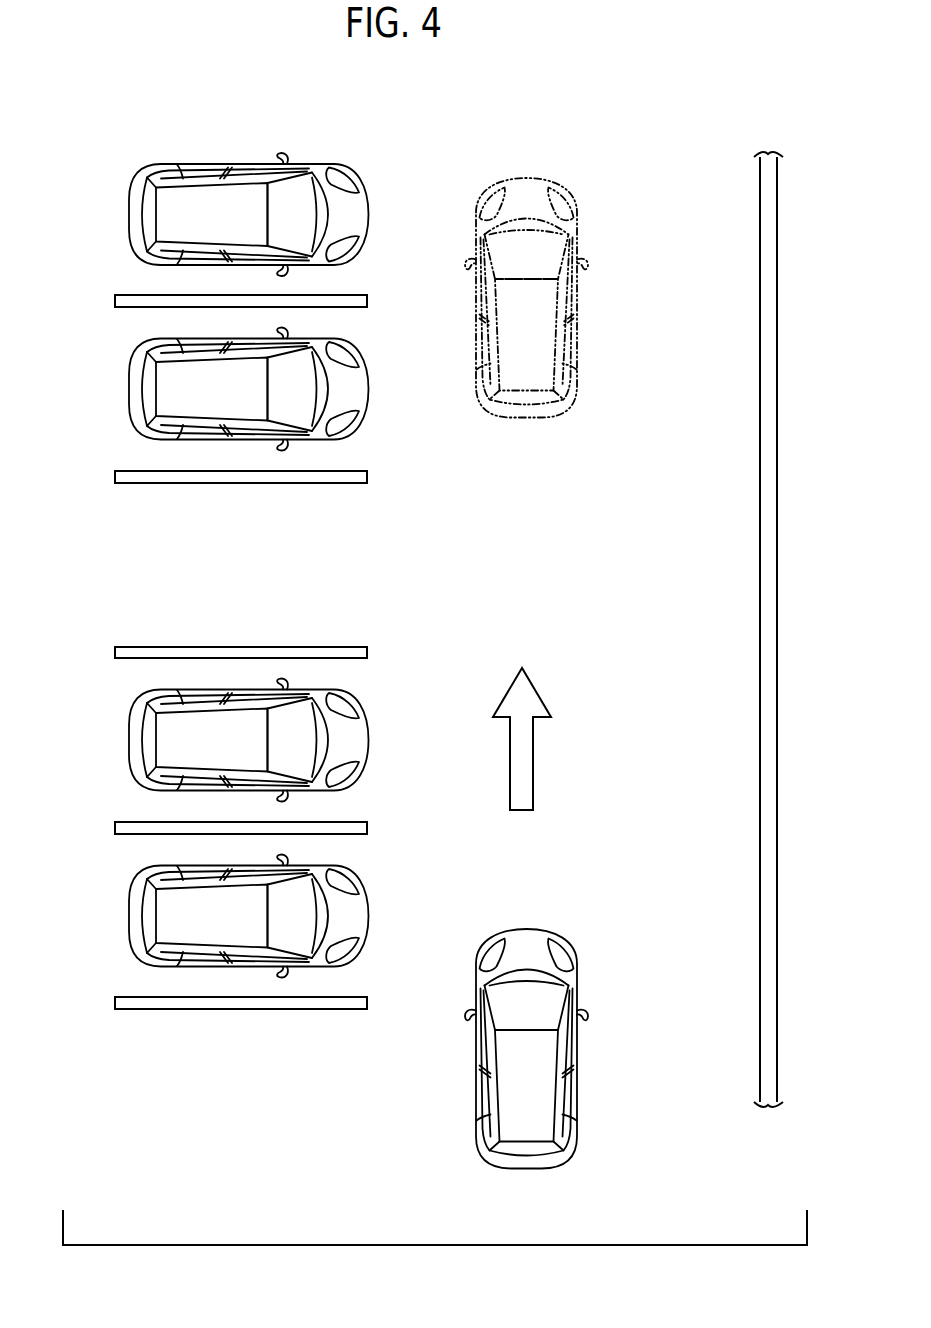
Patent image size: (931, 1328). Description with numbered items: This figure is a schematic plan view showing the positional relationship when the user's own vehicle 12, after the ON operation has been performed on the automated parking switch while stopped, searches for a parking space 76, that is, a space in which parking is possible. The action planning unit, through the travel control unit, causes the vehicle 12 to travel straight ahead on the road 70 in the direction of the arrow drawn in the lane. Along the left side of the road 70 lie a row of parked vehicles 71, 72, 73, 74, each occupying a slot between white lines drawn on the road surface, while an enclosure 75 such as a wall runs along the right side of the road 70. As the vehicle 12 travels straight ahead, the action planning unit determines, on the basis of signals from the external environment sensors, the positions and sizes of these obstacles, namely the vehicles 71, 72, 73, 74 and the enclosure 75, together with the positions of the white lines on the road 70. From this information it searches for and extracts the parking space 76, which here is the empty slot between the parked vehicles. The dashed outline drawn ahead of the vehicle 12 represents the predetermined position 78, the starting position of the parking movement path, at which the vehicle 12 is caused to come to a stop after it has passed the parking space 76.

The vehicle 12 is at (479, 1073).
The road 70 is at (546, 580).
The vehicle 71 is at (128, 916).
The vehicle 72 is at (128, 741).
The vehicle 73 is at (128, 390).
The vehicle 74 is at (128, 215).
The enclosure 75 is at (760, 242).
The parking space 76 is at (210, 577).
The predetermined position 78 is at (556, 181).